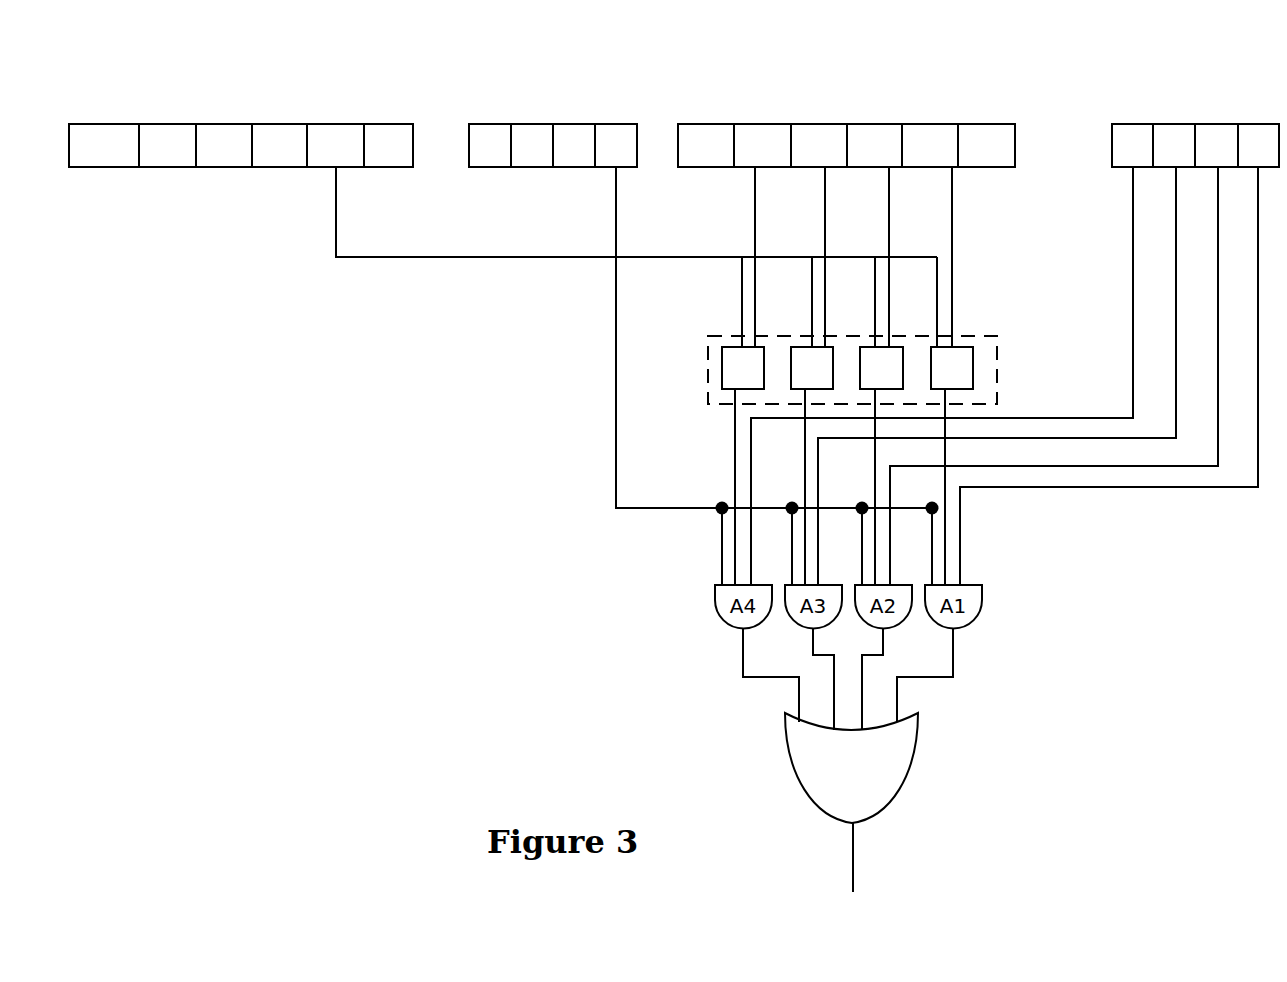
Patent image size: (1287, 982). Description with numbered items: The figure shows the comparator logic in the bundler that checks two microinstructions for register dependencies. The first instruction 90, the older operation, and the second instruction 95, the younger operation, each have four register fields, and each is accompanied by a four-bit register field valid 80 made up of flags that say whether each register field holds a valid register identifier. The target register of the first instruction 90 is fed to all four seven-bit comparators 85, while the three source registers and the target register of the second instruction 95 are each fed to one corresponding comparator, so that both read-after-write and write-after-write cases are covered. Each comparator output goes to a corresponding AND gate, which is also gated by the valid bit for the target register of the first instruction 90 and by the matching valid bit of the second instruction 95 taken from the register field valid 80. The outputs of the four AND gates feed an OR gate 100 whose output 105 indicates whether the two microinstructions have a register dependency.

The first instruction 90 is at (373, 124).
The register field valid 80 is at (568, 124).
The second instruction 95 is at (953, 124).
The comparators 85 is at (997, 362).
The OR gate 100 is at (851, 768).
The output 105 is at (861, 870).